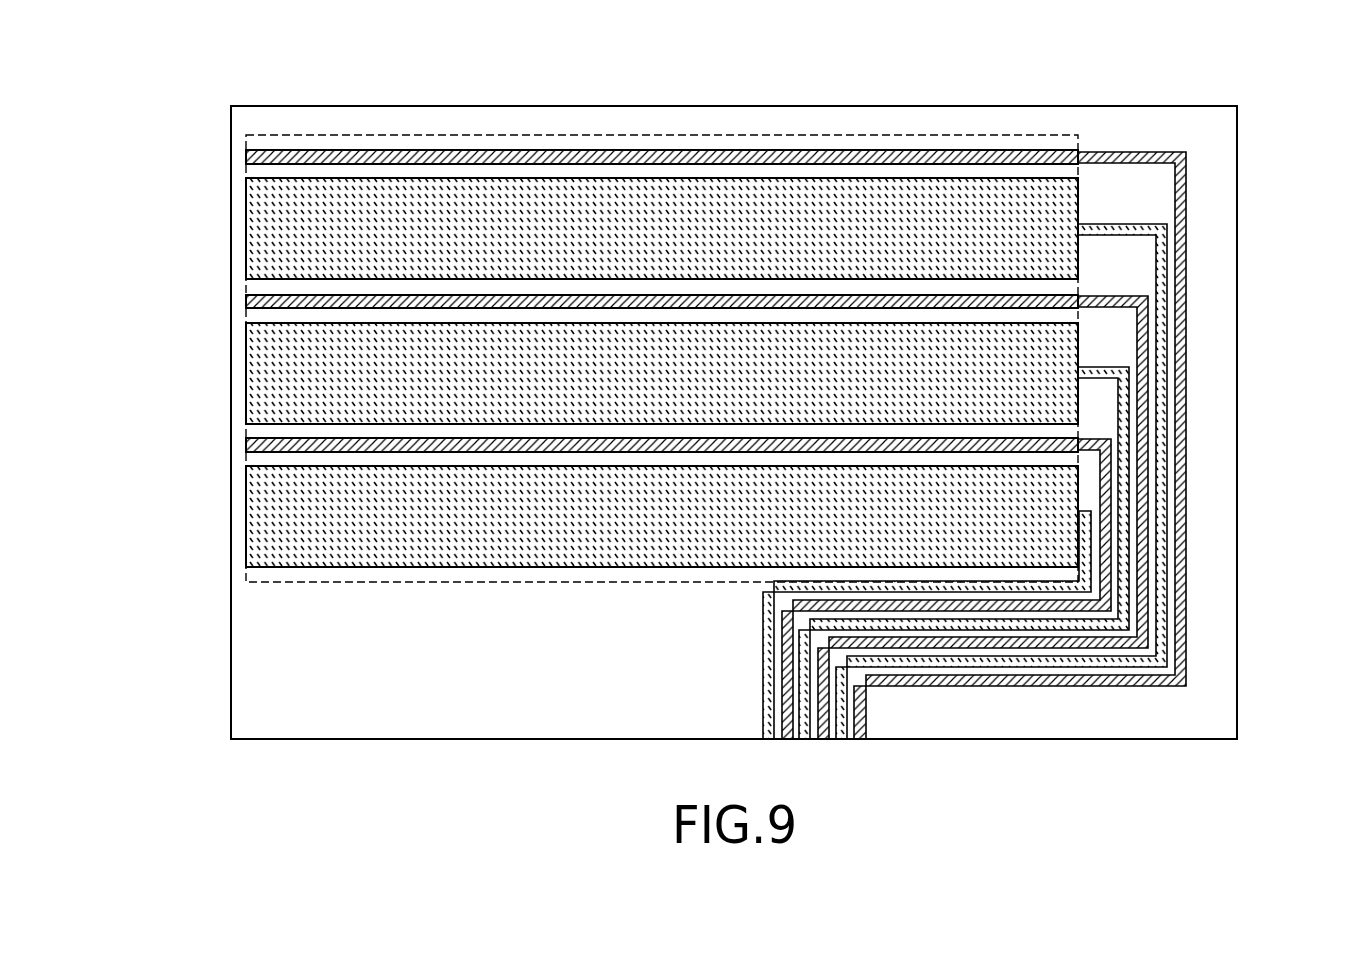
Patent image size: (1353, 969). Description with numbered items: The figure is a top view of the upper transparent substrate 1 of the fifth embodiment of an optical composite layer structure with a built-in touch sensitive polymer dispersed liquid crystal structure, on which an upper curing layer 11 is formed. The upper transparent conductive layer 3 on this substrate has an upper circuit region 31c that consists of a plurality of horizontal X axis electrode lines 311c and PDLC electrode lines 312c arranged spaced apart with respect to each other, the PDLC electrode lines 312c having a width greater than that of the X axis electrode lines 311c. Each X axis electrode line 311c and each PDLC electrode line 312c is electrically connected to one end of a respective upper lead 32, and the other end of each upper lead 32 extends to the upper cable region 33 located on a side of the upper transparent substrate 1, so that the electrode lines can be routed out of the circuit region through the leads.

The upper transparent substrate 1 is at (1185, 106).
The upper curing layer 11 is at (1222, 141).
The upper transparent conductive layer 3 is at (599, 304).
The upper circuit region 31c is at (961, 136).
The X axis electrode line 311c is at (246, 157).
The PDLC electrode line 312c is at (246, 228).
The upper lead 32 is at (1187, 220).
The upper cable region 33 is at (763, 687).